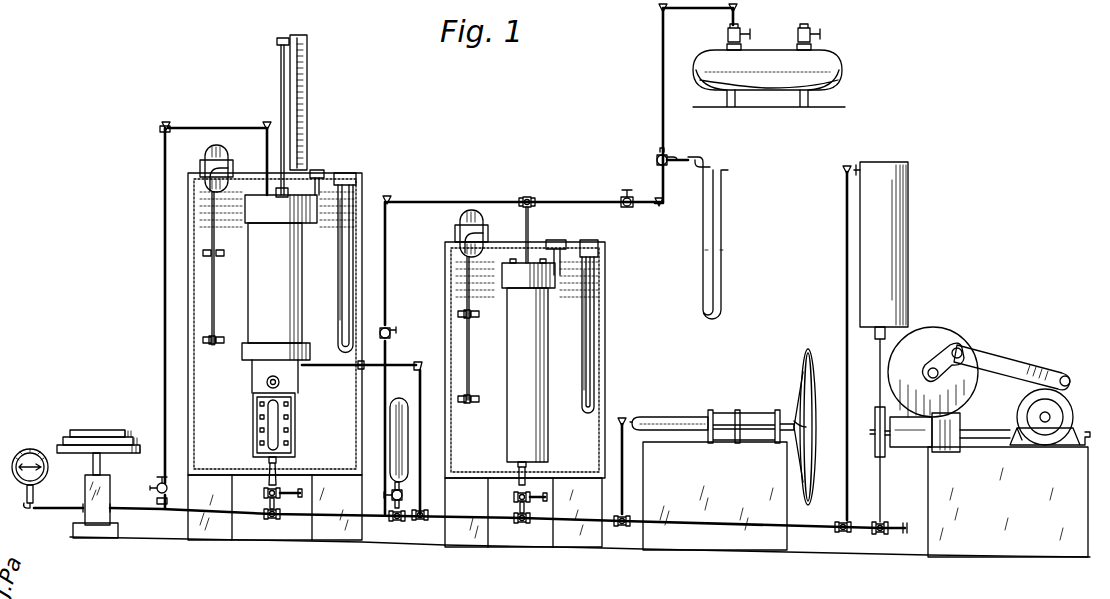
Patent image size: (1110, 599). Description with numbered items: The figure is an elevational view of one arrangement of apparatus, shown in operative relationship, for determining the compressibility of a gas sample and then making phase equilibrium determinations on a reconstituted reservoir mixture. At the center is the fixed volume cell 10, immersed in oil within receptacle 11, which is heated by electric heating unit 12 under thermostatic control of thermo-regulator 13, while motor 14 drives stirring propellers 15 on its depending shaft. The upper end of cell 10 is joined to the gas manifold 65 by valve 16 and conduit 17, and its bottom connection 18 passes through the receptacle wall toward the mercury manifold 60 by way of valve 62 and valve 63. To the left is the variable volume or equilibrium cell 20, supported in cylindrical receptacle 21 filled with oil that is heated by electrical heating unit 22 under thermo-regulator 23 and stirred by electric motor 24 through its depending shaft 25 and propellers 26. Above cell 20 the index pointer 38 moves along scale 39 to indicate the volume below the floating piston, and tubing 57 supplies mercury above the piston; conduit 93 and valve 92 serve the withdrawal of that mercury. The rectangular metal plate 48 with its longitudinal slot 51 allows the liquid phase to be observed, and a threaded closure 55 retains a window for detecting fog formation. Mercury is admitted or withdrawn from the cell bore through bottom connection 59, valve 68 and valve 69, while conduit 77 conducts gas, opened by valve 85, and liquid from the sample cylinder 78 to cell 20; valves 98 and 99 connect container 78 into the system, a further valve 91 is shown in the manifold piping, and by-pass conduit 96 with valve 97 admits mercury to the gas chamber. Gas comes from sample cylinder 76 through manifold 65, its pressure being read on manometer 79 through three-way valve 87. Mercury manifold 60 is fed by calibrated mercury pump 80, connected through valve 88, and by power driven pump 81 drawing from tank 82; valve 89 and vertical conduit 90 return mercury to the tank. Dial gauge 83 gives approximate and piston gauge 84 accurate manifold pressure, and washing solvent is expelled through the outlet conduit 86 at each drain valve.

The fixed volume cell 10 is at (551, 374).
The receptacle 11 is at (604, 310).
The electric heating unit 12 is at (602, 278).
The thermo-regulator 13 is at (560, 249).
The motor 14 is at (458, 219).
The stirring propellers 15 is at (482, 404).
The valve 16 is at (526, 195).
The conduit 17 is at (526, 221).
The connection 18 is at (526, 472).
The equilibrium cell 20 is at (309, 283).
The cylindrical receptacle 21 is at (190, 294).
The electrical heating unit 22 is at (362, 200).
The thermo-regulator 23 is at (317, 171).
The electric motor 24 is at (212, 145).
The depending shaft 25 is at (207, 268).
The propellers 26 is at (207, 340).
The index pointer 38 is at (280, 60).
The scale 39 is at (308, 74).
The rectangular metal plate 48 is at (294, 427).
The longitudinal slot 51 is at (265, 412).
The threaded closure 55 is at (263, 380).
The tubing 57 is at (187, 122).
The bottom connection 59 is at (268, 469).
The mercury manifold 60 is at (462, 540).
The valve 62 is at (518, 496).
The valve 63 is at (522, 526).
The gas manifold 65 is at (474, 192).
The valve 68 is at (268, 490).
The valve 69 is at (272, 520).
The sample cylinder 76 is at (842, 68).
The conduit 77 is at (330, 368).
The sample cylinder 78 is at (397, 422).
The manometer 79 is at (728, 216).
The calibrated mercury pump 80 is at (696, 416).
The power driven pump 81 is at (949, 450).
The tank 82 is at (900, 259).
The dial gauge 83 is at (34, 449).
The piston gauge 84 is at (97, 430).
The valve 85 is at (388, 330).
The outlet conduit 86 is at (565, 493).
The three-way valve 87 is at (656, 156).
The valve 88 is at (620, 530).
The valve 89 is at (842, 536).
The vertical conduit 90 is at (846, 262).
The valve 91 is at (884, 525).
The valve 92 is at (156, 483).
The conduit 93 is at (165, 176).
The by-pass conduit 96 is at (422, 370).
The valve 97 is at (406, 363).
The valve 98 is at (392, 520).
The valve 99 is at (390, 492).